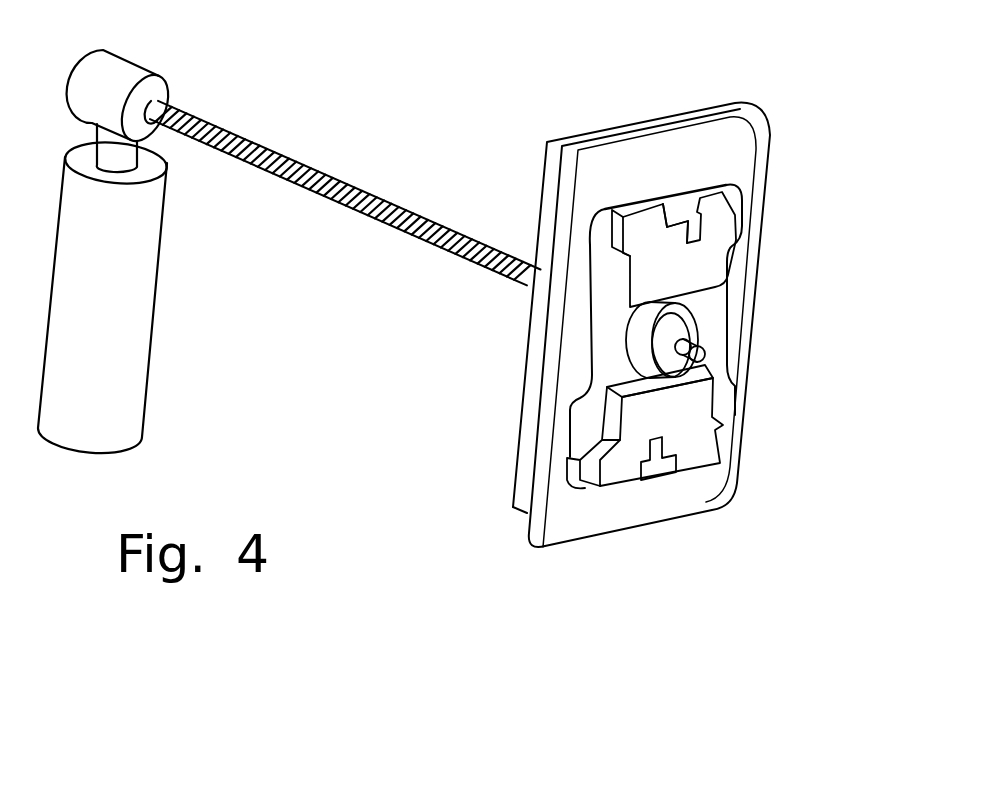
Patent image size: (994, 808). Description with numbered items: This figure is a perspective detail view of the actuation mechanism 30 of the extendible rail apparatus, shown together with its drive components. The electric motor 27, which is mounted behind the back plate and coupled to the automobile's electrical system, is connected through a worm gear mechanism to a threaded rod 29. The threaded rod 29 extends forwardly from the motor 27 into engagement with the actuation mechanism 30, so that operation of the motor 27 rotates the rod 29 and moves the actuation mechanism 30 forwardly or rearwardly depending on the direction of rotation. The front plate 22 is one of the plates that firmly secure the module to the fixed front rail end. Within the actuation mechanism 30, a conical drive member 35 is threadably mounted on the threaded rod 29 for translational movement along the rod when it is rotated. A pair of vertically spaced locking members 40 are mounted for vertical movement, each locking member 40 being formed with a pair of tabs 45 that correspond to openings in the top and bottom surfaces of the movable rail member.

The front plate 22 is at (683, 140).
The electric motor 27 is at (103, 340).
The threaded rod 29 is at (320, 168).
The actuation mechanism 30 is at (660, 560).
The conical drive member 35 is at (690, 323).
The locking member 40 is at (700, 257).
The tab 45 is at (650, 215).